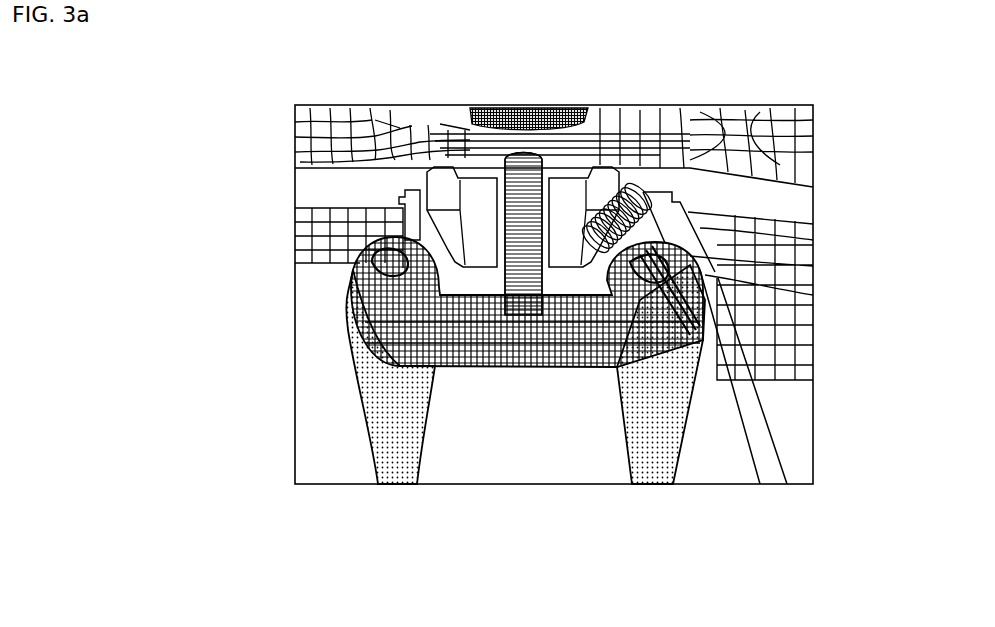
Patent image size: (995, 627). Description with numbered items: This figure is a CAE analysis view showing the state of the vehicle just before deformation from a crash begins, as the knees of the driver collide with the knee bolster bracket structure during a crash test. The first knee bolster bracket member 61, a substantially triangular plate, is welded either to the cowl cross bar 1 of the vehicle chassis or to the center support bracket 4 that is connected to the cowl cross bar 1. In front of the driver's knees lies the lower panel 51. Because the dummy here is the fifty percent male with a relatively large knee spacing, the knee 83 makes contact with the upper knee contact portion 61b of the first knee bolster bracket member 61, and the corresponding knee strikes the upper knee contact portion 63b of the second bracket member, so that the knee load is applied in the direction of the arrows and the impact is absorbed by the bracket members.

The cowl cross bar 1 is at (700, 150).
The center support bracket 4 is at (673, 236).
The lower panel 51 is at (522, 367).
The first knee bolster bracket member 61 is at (407, 218).
The upper knee contact portion 61b is at (353, 270).
The upper knee contact portion 63b is at (700, 290).
The knee 83 is at (643, 485).